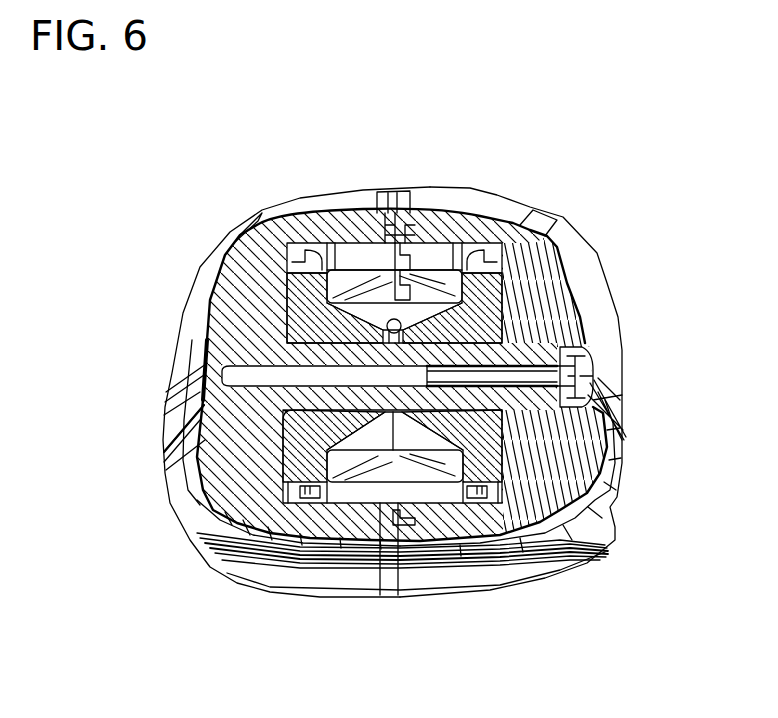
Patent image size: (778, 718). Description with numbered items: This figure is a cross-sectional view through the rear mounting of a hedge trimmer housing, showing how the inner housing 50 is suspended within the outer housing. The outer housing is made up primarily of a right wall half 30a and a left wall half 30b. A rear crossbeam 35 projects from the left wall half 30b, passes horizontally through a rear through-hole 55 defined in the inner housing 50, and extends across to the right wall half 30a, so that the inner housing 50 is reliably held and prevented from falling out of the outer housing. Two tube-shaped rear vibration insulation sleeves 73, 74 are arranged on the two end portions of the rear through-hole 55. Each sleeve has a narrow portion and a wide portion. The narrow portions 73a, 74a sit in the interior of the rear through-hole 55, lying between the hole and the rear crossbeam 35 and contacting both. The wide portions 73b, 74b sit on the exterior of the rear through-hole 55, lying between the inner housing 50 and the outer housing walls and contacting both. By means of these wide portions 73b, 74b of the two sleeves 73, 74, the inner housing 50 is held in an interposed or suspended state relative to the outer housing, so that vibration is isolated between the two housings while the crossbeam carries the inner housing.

The right wall half 30a is at (557, 217).
The left wall half 30b is at (243, 230).
The rear crossbeam 35 is at (388, 415).
The inner housing 50 is at (443, 283).
The rear through-hole 55 is at (405, 320).
The rear vibration insulation sleeve 73 is at (547, 130).
The narrow portion 73a is at (465, 278).
The wide portion 73b is at (487, 290).
The rear vibration insulation sleeve 74 is at (350, 130).
The narrow portion 74a is at (318, 290).
The wide portion 74b is at (307, 280).